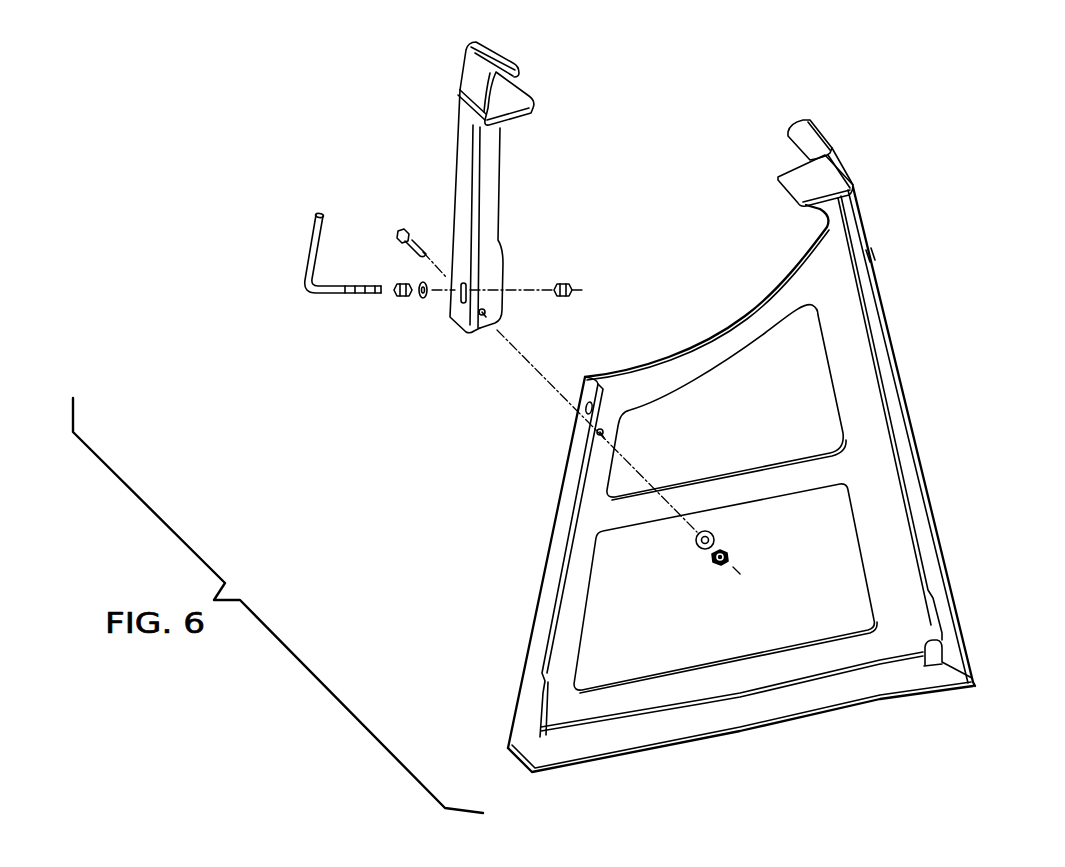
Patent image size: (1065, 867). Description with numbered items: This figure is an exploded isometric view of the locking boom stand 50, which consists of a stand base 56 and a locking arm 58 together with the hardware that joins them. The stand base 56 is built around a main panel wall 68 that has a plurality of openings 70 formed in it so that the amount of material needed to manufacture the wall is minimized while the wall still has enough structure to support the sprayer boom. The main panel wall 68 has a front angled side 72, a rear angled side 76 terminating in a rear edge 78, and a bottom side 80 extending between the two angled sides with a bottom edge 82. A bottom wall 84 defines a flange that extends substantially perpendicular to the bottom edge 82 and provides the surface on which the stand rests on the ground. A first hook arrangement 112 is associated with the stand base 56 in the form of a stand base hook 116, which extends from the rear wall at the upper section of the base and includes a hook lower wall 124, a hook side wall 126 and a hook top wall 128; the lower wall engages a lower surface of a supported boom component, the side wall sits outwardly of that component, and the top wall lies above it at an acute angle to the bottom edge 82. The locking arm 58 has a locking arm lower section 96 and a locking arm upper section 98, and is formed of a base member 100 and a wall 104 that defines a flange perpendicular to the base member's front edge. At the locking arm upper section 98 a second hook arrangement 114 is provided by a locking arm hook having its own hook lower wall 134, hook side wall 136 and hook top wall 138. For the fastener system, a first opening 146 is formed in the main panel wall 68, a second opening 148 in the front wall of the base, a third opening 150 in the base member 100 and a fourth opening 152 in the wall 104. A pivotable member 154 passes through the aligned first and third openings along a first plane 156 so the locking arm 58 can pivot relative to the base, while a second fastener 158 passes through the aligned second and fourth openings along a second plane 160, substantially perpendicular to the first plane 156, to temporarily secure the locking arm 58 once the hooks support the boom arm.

The locking boom stand 50 is at (733, 443).
The stand base 56 is at (733, 425).
The locking arm 58 is at (494, 183).
The main panel wall 68 is at (567, 702).
The openings 70 is at (848, 563).
The front angled side 72 is at (568, 600).
The rear angled side 76 is at (866, 427).
The rear edge 78 is at (870, 353).
The bottom side 80 is at (832, 658).
The bottom edge 82 is at (788, 687).
The bottom wall 84 is at (765, 713).
The locking arm lower section 96 is at (440, 335).
The locking arm upper section 98 is at (505, 66).
The base member 100 is at (488, 203).
The wall 104 is at (467, 177).
The first hook arrangement 112 is at (797, 105).
The second hook arrangement 114 is at (465, 27).
The stand base hook 116 is at (821, 138).
The hook lower wall 124 is at (813, 187).
The hook side wall 126 is at (847, 168).
The hook top wall 128 is at (800, 137).
The hook lower wall 134 is at (512, 102).
The hook side wall 136 is at (468, 82).
The hook top wall 138 is at (495, 47).
The first opening 146 is at (597, 467).
The second opening 148 is at (590, 412).
The third opening 150 is at (482, 312).
The fourth opening 152 is at (460, 280).
The pivotable member 154 is at (402, 237).
The first plane 156 is at (528, 360).
The fastener 158 is at (330, 297).
The second plane 160 is at (533, 290).